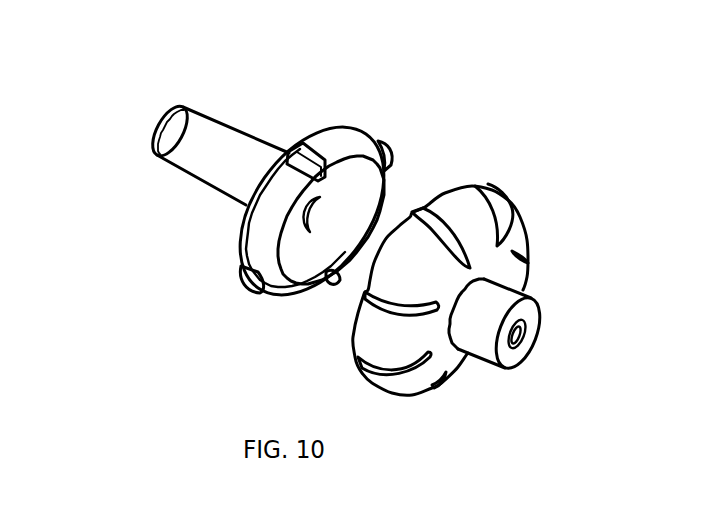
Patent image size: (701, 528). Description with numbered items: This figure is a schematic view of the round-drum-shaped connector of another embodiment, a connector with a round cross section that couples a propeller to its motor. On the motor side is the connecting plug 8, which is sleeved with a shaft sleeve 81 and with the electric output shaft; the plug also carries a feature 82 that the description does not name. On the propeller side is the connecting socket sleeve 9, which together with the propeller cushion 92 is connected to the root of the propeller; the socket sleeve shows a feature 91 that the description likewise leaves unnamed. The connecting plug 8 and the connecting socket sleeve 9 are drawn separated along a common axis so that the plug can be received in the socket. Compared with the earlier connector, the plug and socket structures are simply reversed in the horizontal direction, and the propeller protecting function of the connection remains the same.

The connecting plug 8 is at (350, 145).
The shaft sleeve 81 is at (190, 142).
The limiting protrusion 82 is at (297, 143).
The connecting socket sleeve 9 is at (478, 212).
The limiting groove 91 is at (425, 208).
The propeller cushion 92 is at (490, 270).